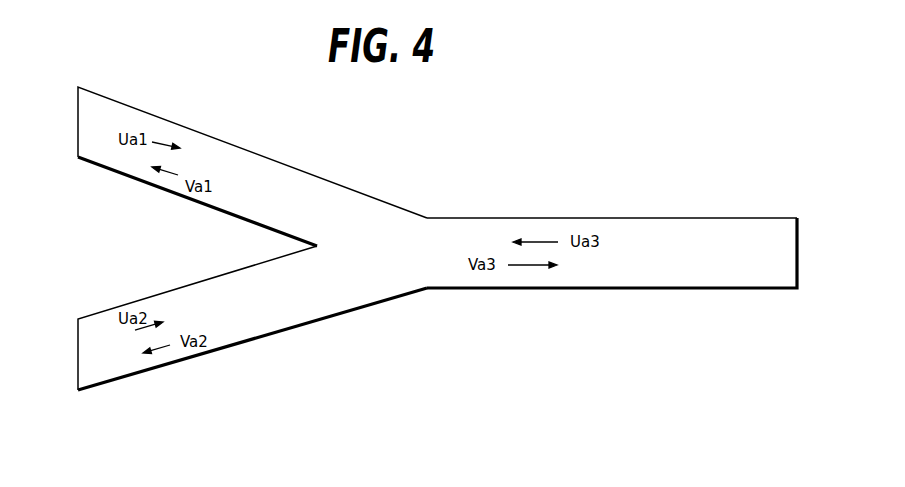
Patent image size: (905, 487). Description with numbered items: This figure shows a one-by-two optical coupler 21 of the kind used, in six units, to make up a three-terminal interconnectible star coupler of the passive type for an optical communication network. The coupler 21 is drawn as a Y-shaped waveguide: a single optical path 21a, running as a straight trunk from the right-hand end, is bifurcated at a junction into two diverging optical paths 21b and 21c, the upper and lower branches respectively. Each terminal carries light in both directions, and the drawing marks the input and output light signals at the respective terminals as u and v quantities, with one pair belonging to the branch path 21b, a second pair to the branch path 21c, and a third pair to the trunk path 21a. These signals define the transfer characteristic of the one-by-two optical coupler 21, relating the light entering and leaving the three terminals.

The 1×2 optical coupler 21 is at (437, 235).
The optical path 21a is at (672, 238).
The optical path 21b is at (107, 117).
The optical path 21c is at (105, 368).